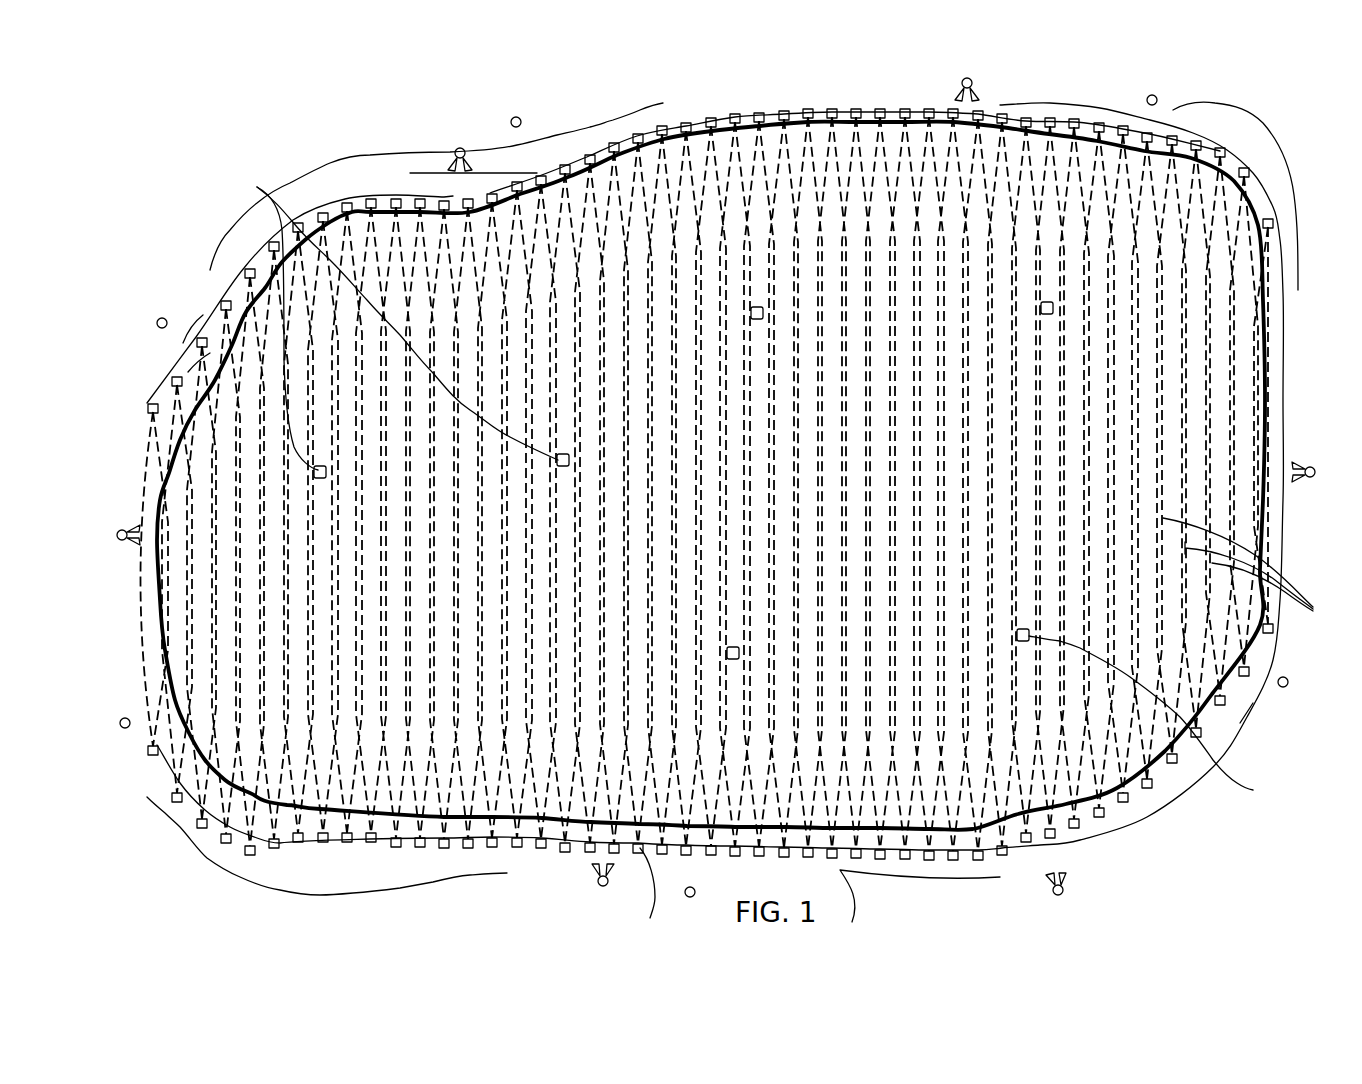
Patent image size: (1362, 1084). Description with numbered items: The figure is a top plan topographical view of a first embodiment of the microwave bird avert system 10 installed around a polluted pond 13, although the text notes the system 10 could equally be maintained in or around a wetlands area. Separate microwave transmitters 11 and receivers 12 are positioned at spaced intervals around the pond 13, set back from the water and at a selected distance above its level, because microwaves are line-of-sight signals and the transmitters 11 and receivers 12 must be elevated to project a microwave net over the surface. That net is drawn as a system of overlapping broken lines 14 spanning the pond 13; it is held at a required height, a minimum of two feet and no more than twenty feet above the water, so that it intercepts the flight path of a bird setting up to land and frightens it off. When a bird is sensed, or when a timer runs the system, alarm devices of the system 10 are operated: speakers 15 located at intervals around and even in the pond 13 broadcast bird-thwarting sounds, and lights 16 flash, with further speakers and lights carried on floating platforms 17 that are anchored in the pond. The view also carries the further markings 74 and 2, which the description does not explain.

The microwave bird avert system 10 is at (1297, 253).
The microwave transmitters 11 is at (663, 118).
The receivers 12 is at (683, 115).
The polluted pond 13 is at (1220, 352).
The overlapping broken lines 14 is at (257, 608).
The speakers 15 is at (458, 150).
The lights 16 is at (157, 322).
The floating platforms 17 is at (257, 187).
The connecting wires 74 is at (1253, 569).
The section line 2- 2 is at (243, 458).